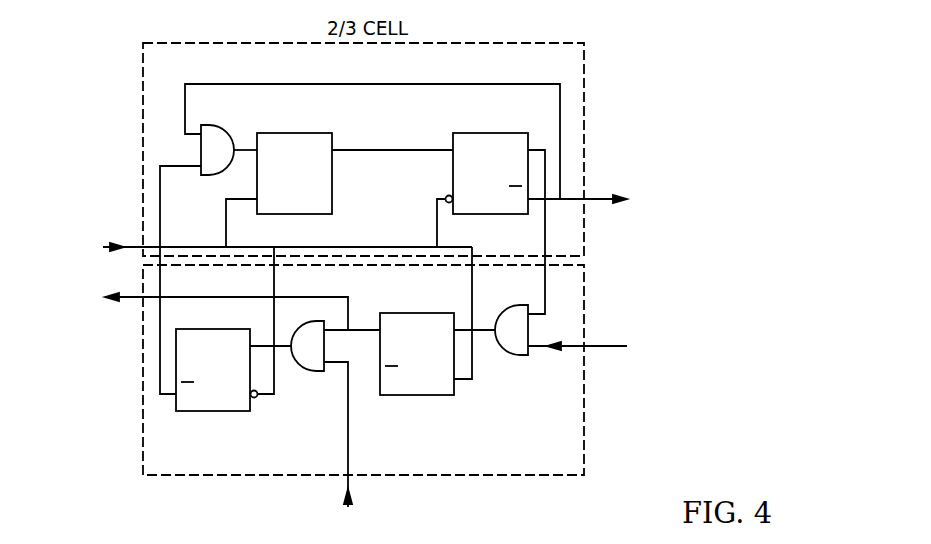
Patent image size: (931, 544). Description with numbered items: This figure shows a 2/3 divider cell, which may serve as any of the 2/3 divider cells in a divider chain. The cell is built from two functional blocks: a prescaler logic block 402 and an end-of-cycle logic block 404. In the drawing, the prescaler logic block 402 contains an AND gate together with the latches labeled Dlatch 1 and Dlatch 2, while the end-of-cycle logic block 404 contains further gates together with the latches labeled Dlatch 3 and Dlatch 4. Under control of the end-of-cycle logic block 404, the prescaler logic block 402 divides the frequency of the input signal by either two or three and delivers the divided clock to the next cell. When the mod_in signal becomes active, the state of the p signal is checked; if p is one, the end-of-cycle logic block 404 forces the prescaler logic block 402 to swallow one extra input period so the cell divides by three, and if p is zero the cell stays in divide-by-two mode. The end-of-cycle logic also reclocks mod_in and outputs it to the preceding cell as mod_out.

The prescaler logic block 402 is at (450, 72).
The end-of-cycle logic block 404 is at (557, 464).
The Dlatch 1 is at (294, 161).
The Dlatch 2 is at (490, 161).
The Dlatch 3 is at (213, 357).
The Dlatch 4 is at (417, 341).